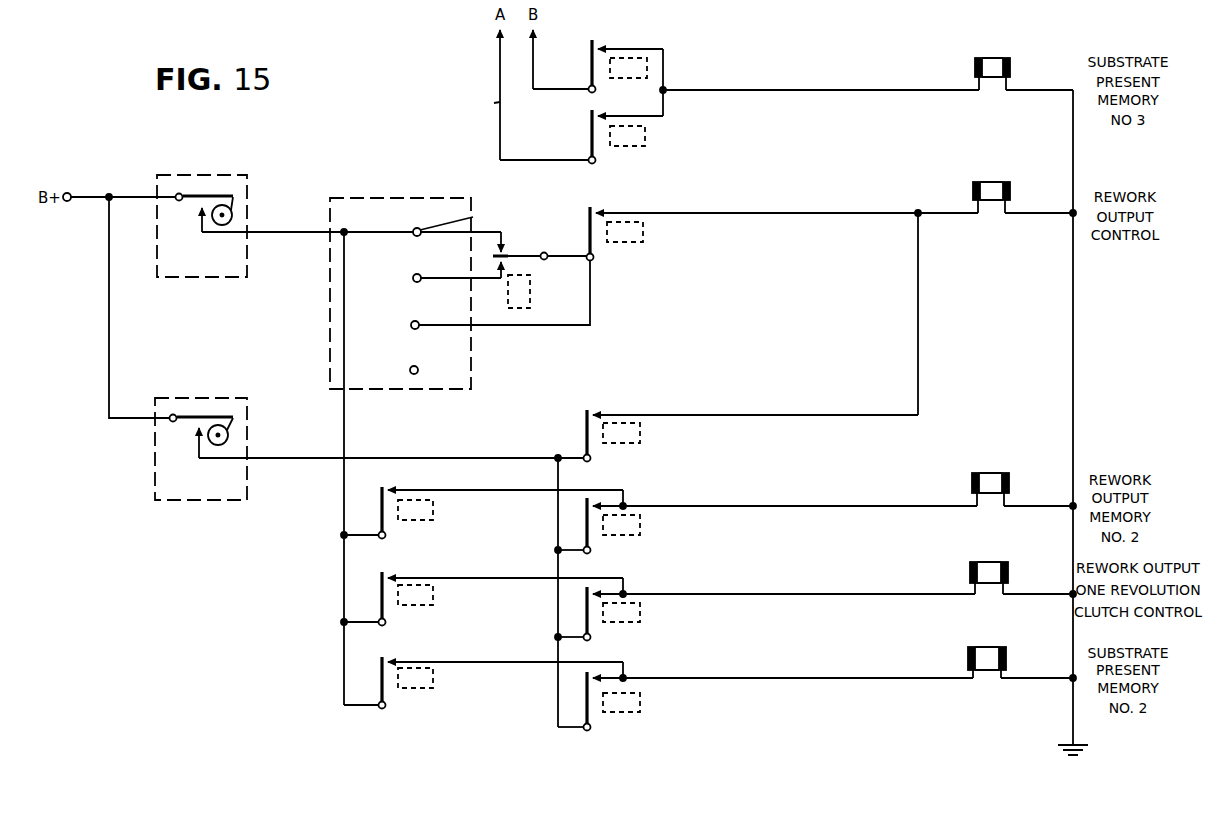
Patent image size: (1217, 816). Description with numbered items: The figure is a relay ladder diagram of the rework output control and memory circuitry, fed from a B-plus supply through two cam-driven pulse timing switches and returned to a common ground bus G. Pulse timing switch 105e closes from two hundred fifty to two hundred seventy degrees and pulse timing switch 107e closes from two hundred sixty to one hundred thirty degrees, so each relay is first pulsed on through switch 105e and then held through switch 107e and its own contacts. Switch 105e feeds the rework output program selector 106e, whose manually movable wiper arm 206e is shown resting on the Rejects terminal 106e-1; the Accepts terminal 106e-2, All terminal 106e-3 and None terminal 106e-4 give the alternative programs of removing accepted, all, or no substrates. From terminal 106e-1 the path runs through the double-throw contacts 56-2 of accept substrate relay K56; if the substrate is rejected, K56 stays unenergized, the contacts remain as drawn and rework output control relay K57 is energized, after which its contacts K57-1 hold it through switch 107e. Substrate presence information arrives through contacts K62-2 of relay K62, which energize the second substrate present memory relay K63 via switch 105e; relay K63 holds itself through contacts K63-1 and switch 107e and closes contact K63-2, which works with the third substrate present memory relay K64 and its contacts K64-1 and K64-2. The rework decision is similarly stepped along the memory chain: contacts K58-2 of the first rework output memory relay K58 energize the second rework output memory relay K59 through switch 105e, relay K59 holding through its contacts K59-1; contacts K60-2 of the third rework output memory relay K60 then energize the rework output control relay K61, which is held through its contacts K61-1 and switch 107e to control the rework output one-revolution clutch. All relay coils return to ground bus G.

The pulse timing switch 105e is at (167, 280).
The pulse timing switch 107e is at (213, 503).
The rework output program selector 106e is at (470, 213).
The Rejects terminal 106e-1 is at (473, 217).
The Accepts terminal 106e-2 is at (417, 282).
The All terminal 106e-3 is at (388, 313).
The None terminal 106e-4 is at (398, 357).
The wiper arm 206e is at (363, 237).
The relay contacts K56-2 56-2 is at (507, 254).
The accept substrate relay K56 is at (530, 296).
The relay contacts K64-1 is at (601, 46).
The relay contact K63-2 is at (597, 112).
The relay contacts K64-2 is at (596, 210).
The third substrate present memory relay K64 is at (645, 80).
The second substrate present memory relay K63 is at (646, 144).
The rework output control relay K57 is at (640, 441).
The relay contacts K57-1 is at (593, 413).
The relay contacts K58-2 is at (390, 489).
The first rework output memory relay K58 is at (433, 518).
The relay contacts K59-1 is at (593, 502).
The second rework output memory relay K59 is at (640, 533).
The relay contacts K60-2 is at (390, 577).
The third rework output memory relay K60 is at (433, 603).
The relay contacts K61-1 is at (593, 590).
The rework output control relay K61 is at (640, 620).
The relay contacts K62-2 is at (390, 661).
The substrate present memory relay K62 is at (433, 686).
The relay contacts K63-1 is at (593, 672).
The ground bus G is at (1075, 327).